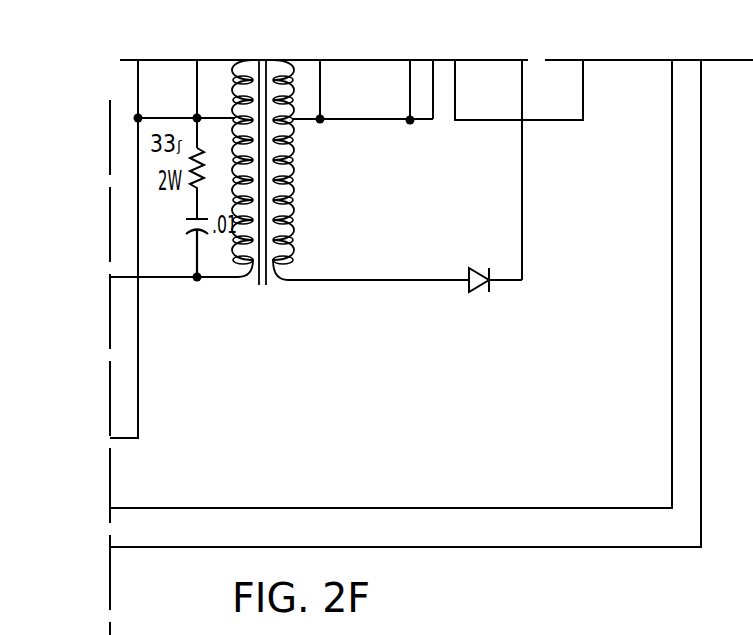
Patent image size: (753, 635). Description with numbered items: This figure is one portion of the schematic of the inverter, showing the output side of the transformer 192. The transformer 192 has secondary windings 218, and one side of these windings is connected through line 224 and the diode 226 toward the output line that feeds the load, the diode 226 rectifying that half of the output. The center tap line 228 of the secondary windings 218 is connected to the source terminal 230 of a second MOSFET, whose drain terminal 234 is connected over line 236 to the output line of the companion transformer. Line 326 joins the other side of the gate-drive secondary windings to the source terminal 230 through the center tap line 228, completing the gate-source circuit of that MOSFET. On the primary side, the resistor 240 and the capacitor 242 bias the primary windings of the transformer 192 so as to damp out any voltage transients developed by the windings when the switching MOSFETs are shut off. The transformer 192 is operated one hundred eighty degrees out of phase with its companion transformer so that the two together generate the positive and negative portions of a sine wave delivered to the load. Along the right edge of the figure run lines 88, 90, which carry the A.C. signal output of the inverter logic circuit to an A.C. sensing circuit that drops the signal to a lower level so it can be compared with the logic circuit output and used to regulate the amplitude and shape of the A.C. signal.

The transformer 192 is at (267, 203).
The secondary windings 218 is at (291, 215).
The line 224 is at (363, 281).
The diode 226 is at (477, 270).
The center tap line 228 is at (375, 122).
The source terminal 230 is at (424, 122).
The drain terminal 234 is at (457, 90).
The line 236 is at (555, 122).
The resistor 240 is at (196, 189).
The capacitor 242 is at (195, 233).
The line 326 is at (322, 87).
The line 88 is at (672, 245).
The line 90 is at (704, 213).